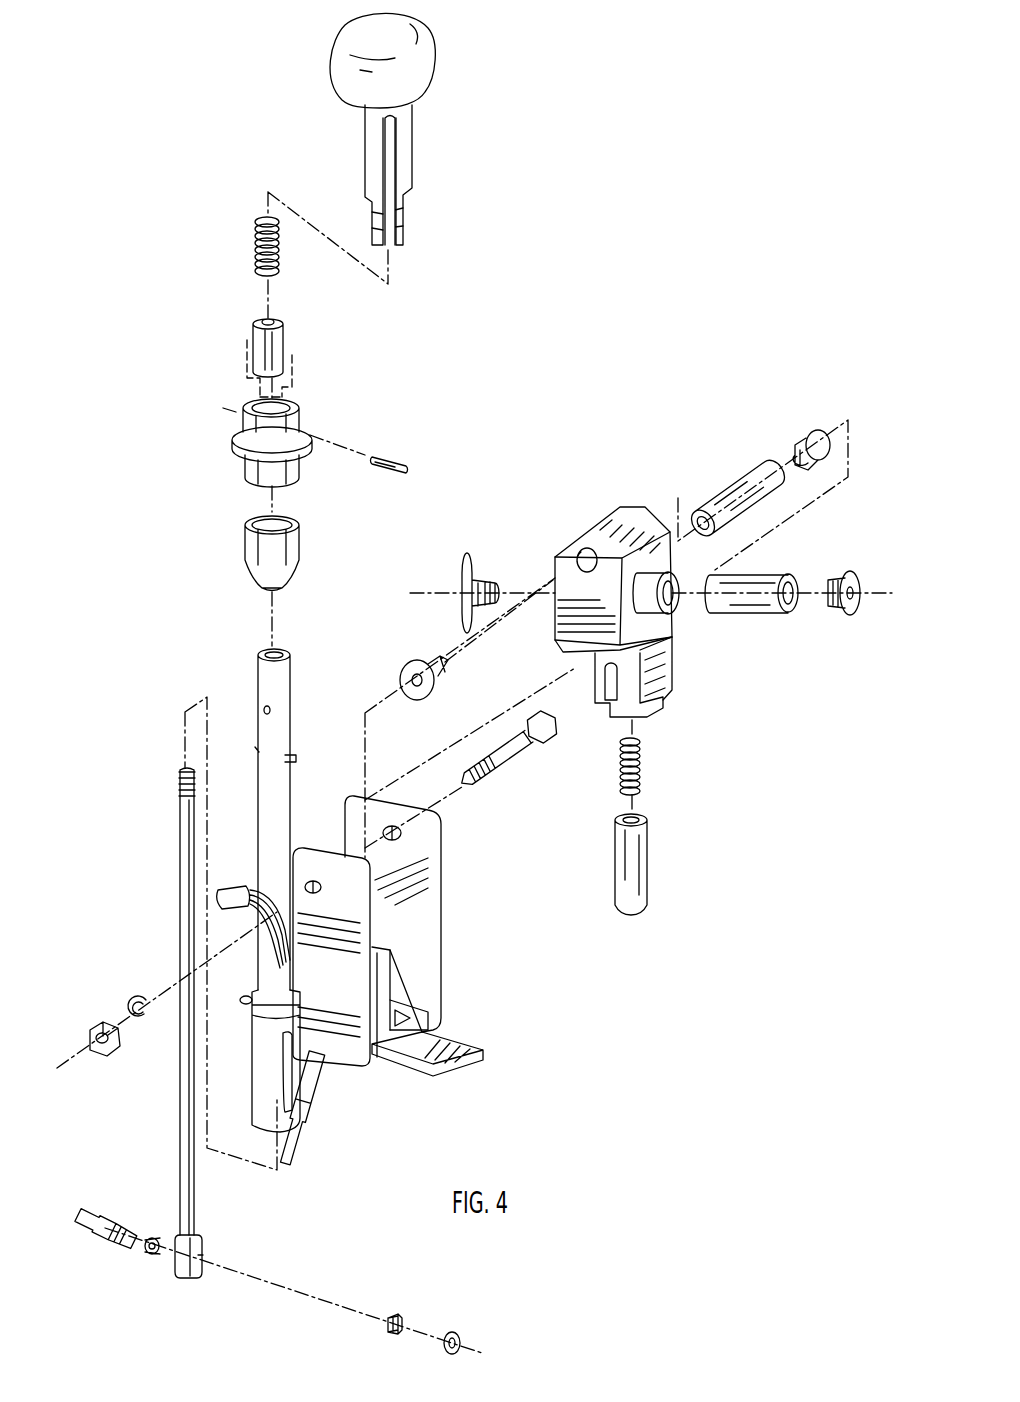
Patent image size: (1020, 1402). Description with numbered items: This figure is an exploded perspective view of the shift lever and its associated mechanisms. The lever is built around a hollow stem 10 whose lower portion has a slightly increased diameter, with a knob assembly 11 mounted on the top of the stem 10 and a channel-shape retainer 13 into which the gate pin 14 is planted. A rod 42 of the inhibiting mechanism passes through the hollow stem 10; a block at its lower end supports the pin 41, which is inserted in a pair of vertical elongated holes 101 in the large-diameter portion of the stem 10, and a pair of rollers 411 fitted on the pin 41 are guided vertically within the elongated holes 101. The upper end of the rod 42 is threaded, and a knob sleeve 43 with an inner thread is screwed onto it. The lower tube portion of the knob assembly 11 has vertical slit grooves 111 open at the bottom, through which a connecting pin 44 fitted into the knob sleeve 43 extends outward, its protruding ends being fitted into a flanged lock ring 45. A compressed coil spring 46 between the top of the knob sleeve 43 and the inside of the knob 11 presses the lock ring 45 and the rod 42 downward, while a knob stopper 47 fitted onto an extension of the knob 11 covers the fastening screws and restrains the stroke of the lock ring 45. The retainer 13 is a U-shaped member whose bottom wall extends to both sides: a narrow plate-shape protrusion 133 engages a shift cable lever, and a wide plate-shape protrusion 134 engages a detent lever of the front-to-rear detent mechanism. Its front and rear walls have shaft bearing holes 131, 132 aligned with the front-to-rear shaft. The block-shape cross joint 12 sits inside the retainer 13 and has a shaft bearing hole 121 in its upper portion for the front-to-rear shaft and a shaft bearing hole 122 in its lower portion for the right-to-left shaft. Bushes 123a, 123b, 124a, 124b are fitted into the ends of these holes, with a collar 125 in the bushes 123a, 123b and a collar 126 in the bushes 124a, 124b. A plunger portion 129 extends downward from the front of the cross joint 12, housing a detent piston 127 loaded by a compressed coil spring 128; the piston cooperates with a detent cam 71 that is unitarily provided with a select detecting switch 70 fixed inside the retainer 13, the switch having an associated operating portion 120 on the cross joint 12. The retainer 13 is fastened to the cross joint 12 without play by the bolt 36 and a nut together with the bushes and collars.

The stem 10 is at (270, 815).
The vertical elongated holes 101 is at (330, 1088).
The knob assembly 11 is at (430, 70).
The slit grooves 111 is at (405, 190).
The cross joint 12 is at (623, 606).
The operating portion 120 is at (598, 697).
The shaft bearing hole 121 is at (572, 555).
The shaft bearing hole 122 is at (682, 612).
The bush 123a is at (436, 684).
The bush 123b is at (812, 430).
The bush 124a is at (462, 572).
The bush 124b is at (845, 575).
The collar 125 is at (735, 497).
The collar 126 is at (766, 615).
The detent piston 127 is at (638, 855).
The compressed coil spring 128 is at (643, 762).
The plunger portion 129 is at (684, 700).
The retainer 13 is at (425, 904).
The shaft bearing hole 131 is at (390, 826).
The shaft bearing hole 132 is at (312, 880).
The narrow plate-shape protrusion 133 is at (245, 1002).
The wide plate-shape protrusion 134 is at (488, 1056).
The gate pin 14 is at (298, 1152).
The bolt 36 is at (505, 772).
The pin 41 is at (108, 1242).
The rollers 411 is at (153, 1256).
The rod 42 is at (178, 1090).
The knob sleeve 43 is at (285, 333).
The connecting pin 44 is at (395, 452).
The flanged lock ring 45 is at (240, 460).
The compressed coil spring 46 is at (255, 255).
The knob stopper 47 is at (243, 548).
The switch 70 is at (385, 965).
The cam 71 is at (430, 1008).